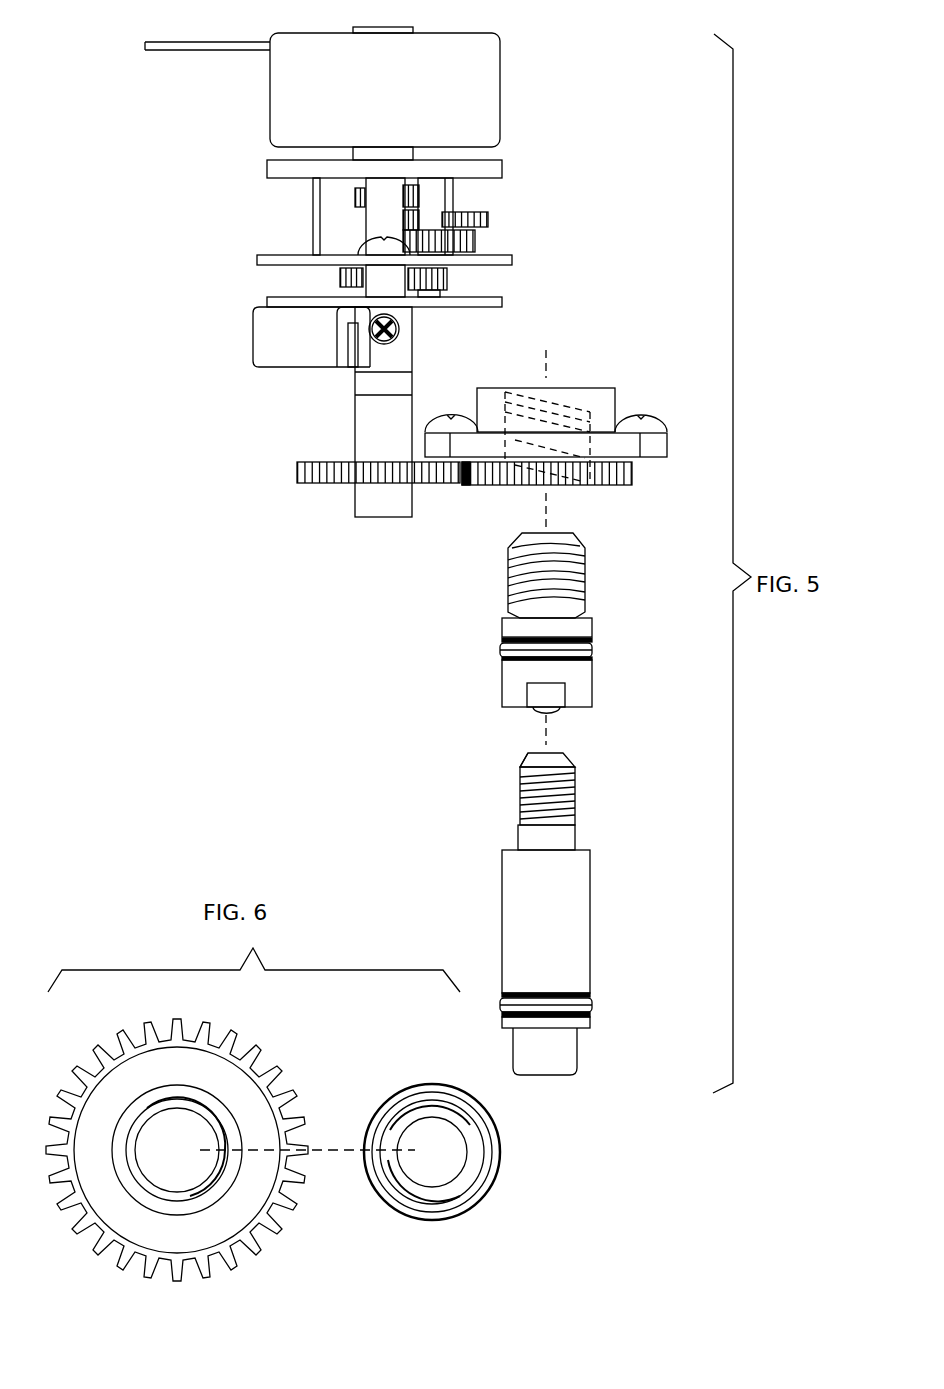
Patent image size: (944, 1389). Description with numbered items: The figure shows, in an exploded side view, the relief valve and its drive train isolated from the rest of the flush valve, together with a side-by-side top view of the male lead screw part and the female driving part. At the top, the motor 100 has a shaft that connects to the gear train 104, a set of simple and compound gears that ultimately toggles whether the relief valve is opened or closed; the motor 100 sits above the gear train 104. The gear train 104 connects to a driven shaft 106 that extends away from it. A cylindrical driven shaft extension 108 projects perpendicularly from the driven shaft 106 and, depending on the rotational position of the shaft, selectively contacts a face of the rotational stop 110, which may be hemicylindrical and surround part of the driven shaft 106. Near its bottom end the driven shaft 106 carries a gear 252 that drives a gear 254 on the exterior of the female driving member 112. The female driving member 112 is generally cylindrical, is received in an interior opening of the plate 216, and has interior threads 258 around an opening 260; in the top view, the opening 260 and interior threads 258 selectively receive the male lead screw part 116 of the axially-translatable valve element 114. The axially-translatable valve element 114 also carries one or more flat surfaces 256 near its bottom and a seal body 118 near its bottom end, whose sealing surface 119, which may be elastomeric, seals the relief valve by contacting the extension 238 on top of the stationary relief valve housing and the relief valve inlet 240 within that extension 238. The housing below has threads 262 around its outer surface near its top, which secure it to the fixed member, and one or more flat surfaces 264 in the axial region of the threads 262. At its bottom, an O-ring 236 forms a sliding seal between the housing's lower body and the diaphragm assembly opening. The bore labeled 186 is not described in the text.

In FIG. 5, the motor 100 is at (413, 97).
In FIG. 5, the gear train 104 is at (513, 228).
In FIG. 5, the driven shaft 106 is at (370, 415).
In FIG. 5, the driven shaft extension 108 is at (398, 332).
In FIG. 5, the rotational stop 110 is at (264, 334).
In FIG. 5, the female driving member 112 is at (607, 407).
In FIG. 6, the female driving member 112 is at (219, 1152).
In FIG. 5, the axially-translatable valve element 114 is at (567, 810).
In FIG. 6, the axially-translatable valve element 114 is at (477, 1173).
In FIG. 5, the male lead screw part 116 is at (543, 580).
In FIG. 5, the seal body 118 is at (582, 672).
In FIG. 5, the sealing surface 119 is at (540, 710).
In FIG. 6, the bore 186 is at (456, 1166).
In FIG. 5, the plate 216 is at (652, 452).
In FIG. 5, the O-ring 236 is at (590, 1005).
In FIG. 5, the extension 238 is at (525, 757).
In FIG. 5, the relief valve inlet 240 is at (570, 762).
In FIG. 5, the gear 252 is at (323, 478).
In FIG. 5, the gear 254 is at (600, 477).
In FIG. 6, the gear 254 is at (258, 1060).
In FIG. 5, the flat surfaces 256 is at (545, 692).
In FIG. 5, the interior threads 258 is at (560, 415).
In FIG. 6, the opening 260 is at (198, 1166).
In FIG. 5, the threads 262 is at (575, 808).
In FIG. 5, the flat surfaces 264 is at (518, 838).